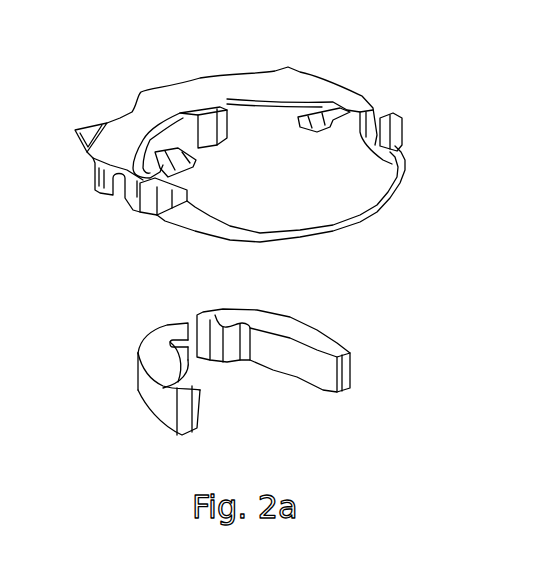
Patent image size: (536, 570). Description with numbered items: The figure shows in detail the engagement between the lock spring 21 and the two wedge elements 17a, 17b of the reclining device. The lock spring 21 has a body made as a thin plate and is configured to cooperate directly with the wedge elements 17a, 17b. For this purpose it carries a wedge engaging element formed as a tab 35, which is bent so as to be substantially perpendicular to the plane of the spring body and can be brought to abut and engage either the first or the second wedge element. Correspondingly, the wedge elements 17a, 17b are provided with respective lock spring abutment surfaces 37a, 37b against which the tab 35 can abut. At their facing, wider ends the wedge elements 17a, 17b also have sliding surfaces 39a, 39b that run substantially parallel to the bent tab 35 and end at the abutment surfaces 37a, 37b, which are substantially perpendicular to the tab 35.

The lock spring 21 is at (315, 78).
The tab 35 is at (213, 130).
The first wedge element 17a is at (327, 338).
The second wedge element 17b is at (170, 387).
The lock spring abutment surface 37a is at (223, 322).
The lock spring abutment surface 37b is at (183, 328).
The sliding surface 39a is at (210, 337).
The sliding surface 39b is at (188, 322).